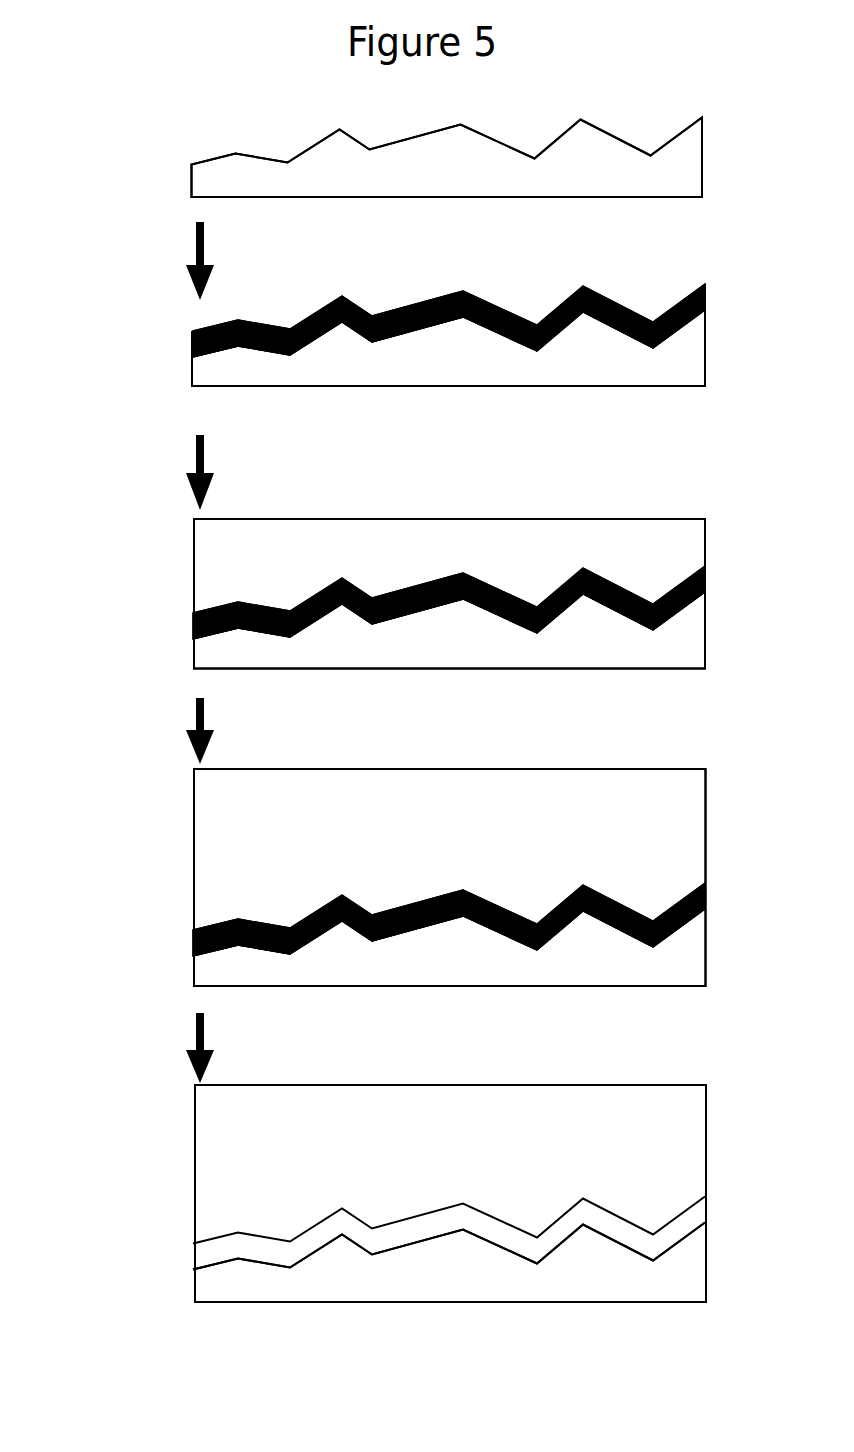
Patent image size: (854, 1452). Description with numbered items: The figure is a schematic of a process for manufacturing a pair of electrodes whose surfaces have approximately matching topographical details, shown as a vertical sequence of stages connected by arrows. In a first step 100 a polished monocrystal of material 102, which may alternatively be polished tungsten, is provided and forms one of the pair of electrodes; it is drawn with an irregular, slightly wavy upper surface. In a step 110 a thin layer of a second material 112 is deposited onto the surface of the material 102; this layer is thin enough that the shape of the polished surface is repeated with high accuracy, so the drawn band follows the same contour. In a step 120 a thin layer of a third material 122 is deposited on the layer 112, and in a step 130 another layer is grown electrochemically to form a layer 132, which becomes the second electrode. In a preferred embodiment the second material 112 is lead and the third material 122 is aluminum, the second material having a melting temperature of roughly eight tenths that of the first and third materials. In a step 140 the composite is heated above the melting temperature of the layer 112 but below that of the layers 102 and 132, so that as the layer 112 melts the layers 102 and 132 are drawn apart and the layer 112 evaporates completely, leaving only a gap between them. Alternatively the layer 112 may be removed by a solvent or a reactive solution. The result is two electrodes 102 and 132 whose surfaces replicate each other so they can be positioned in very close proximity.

The first step 100 is at (395, 158).
The polished monocrystal of material 102 is at (449, 704).
The step of depositing second material 110 is at (396, 335).
The layer of second material 112 is at (644, 314).
The step of depositing third material 120 is at (396, 594).
The layer of third material 122 is at (449, 594).
The step of growing electrochemical layer 130 is at (397, 877).
The electrochemically grown layer 132 is at (450, 1035).
The heating step 140 is at (397, 1193).